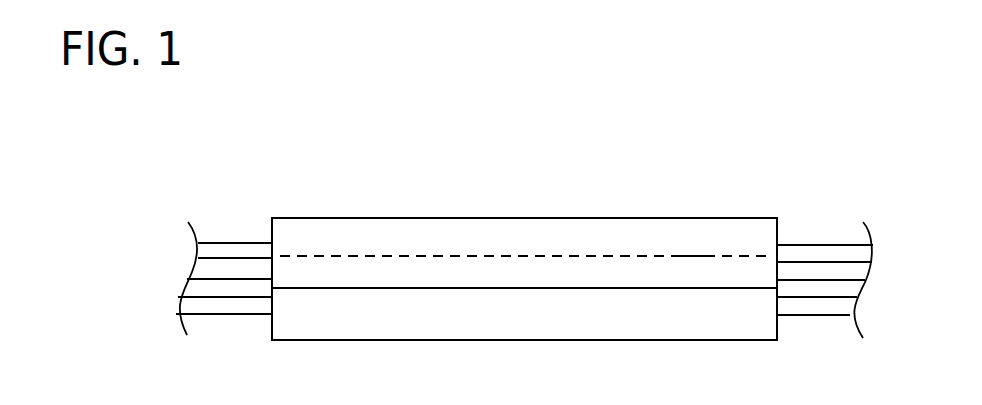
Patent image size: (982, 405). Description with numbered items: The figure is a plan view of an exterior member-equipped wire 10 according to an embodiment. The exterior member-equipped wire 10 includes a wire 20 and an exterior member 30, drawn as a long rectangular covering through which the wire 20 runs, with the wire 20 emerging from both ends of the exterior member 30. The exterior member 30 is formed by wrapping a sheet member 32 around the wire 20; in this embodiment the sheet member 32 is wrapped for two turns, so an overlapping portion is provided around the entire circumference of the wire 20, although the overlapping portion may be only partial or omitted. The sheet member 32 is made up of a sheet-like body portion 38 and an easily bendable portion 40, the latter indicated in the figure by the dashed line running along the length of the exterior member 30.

The exterior member-equipped wire 10 is at (355, 162).
The wire 20 is at (820, 287).
The exterior member 30 is at (493, 218).
The sheet member 32 is at (718, 184).
The sheet-like body portion 38 is at (643, 233).
The easily bendable portion 40 is at (692, 255).